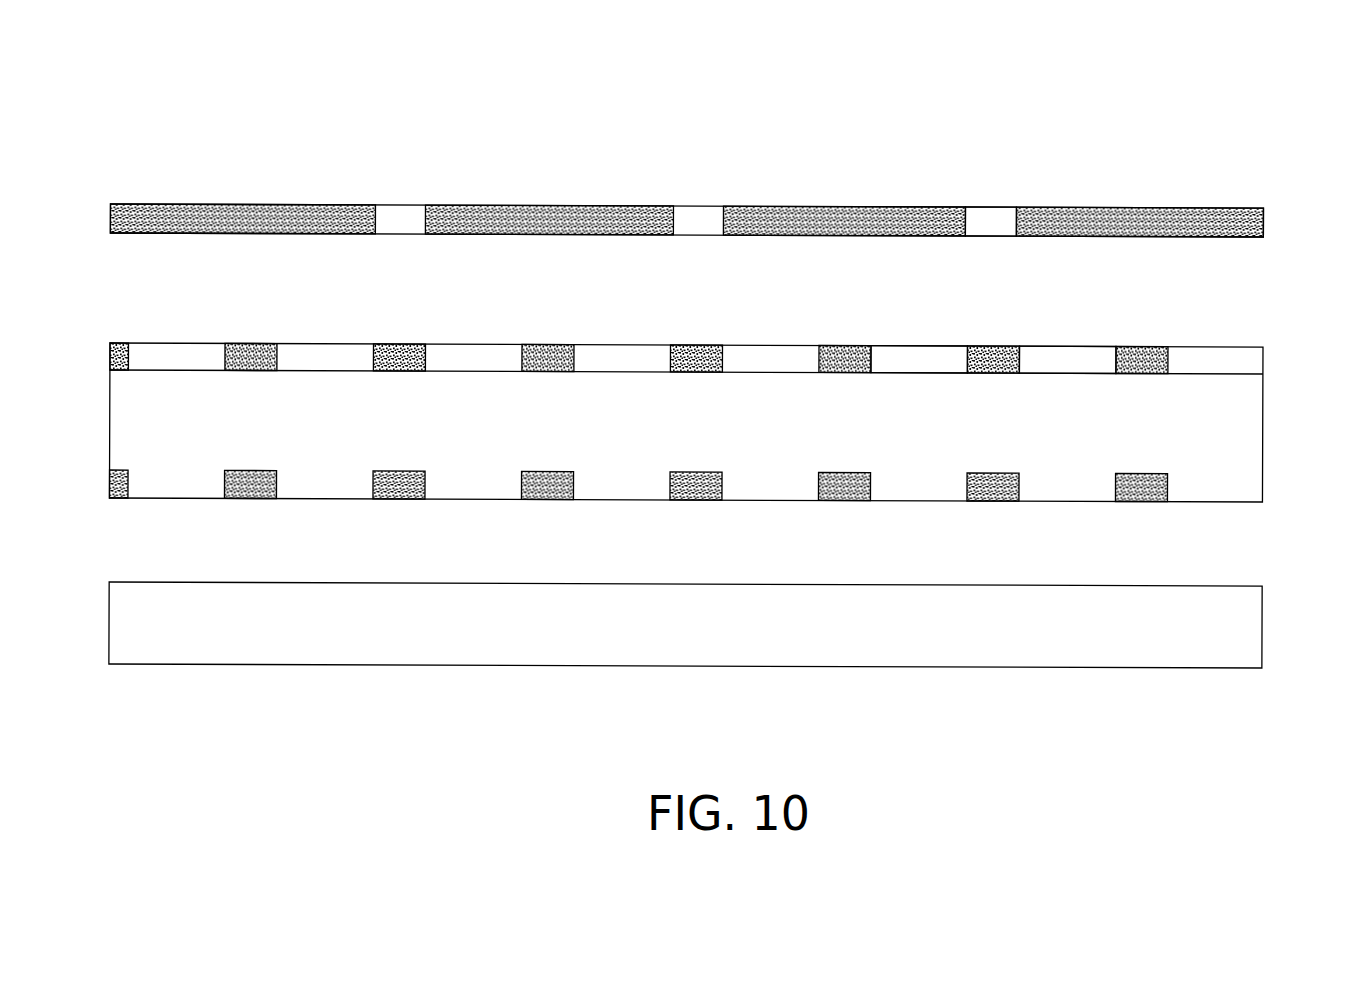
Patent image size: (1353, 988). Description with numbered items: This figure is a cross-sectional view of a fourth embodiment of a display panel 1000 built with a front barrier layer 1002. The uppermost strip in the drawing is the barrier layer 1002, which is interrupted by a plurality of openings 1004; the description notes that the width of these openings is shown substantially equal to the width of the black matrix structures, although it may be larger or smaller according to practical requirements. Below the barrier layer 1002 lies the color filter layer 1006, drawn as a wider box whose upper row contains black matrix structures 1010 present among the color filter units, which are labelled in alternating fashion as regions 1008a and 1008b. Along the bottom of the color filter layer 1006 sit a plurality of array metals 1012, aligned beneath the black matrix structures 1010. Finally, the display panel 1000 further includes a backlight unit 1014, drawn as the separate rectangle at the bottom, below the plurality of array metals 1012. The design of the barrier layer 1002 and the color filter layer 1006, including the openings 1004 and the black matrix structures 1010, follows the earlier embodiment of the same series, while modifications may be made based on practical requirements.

The display panel 1000 is at (1343, 52).
The barrier layer 1002 is at (1266, 223).
The openings 1004 is at (979, 216).
The color filter layer 1006 is at (1266, 361).
The first pixel region 1008a is at (1090, 347).
The second pixel region 1008b is at (938, 346).
The black matrix structures 1010 is at (836, 346).
The array metals 1012 is at (1135, 475).
The backlight unit 1014 is at (1266, 634).